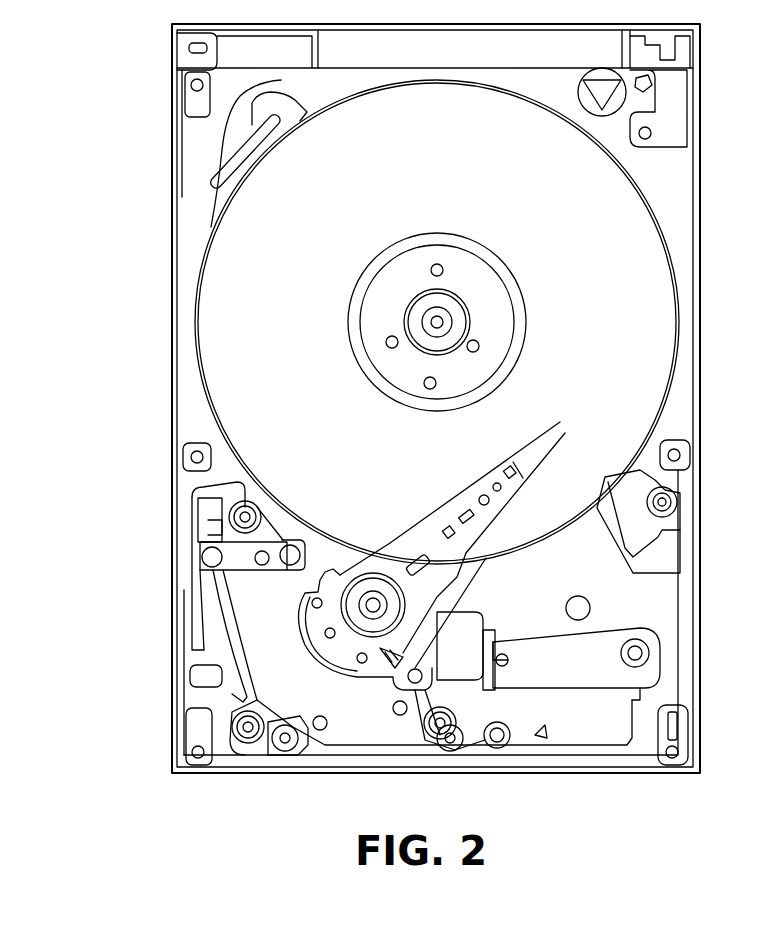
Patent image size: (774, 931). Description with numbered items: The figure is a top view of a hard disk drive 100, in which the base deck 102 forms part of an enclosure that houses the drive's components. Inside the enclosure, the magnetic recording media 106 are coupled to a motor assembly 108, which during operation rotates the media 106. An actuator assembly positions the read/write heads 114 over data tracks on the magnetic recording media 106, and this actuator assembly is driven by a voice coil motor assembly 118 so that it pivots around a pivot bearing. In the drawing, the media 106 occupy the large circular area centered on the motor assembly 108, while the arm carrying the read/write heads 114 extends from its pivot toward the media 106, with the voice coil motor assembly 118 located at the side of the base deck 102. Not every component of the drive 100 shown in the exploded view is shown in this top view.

The hard disk drive 100 is at (93, 106).
The base deck 102 is at (682, 173).
The magnetic recording media 106 is at (633, 248).
The motor assembly 108 is at (470, 268).
The read/write heads 114 is at (563, 421).
The voice coil motor assembly 118 is at (166, 569).